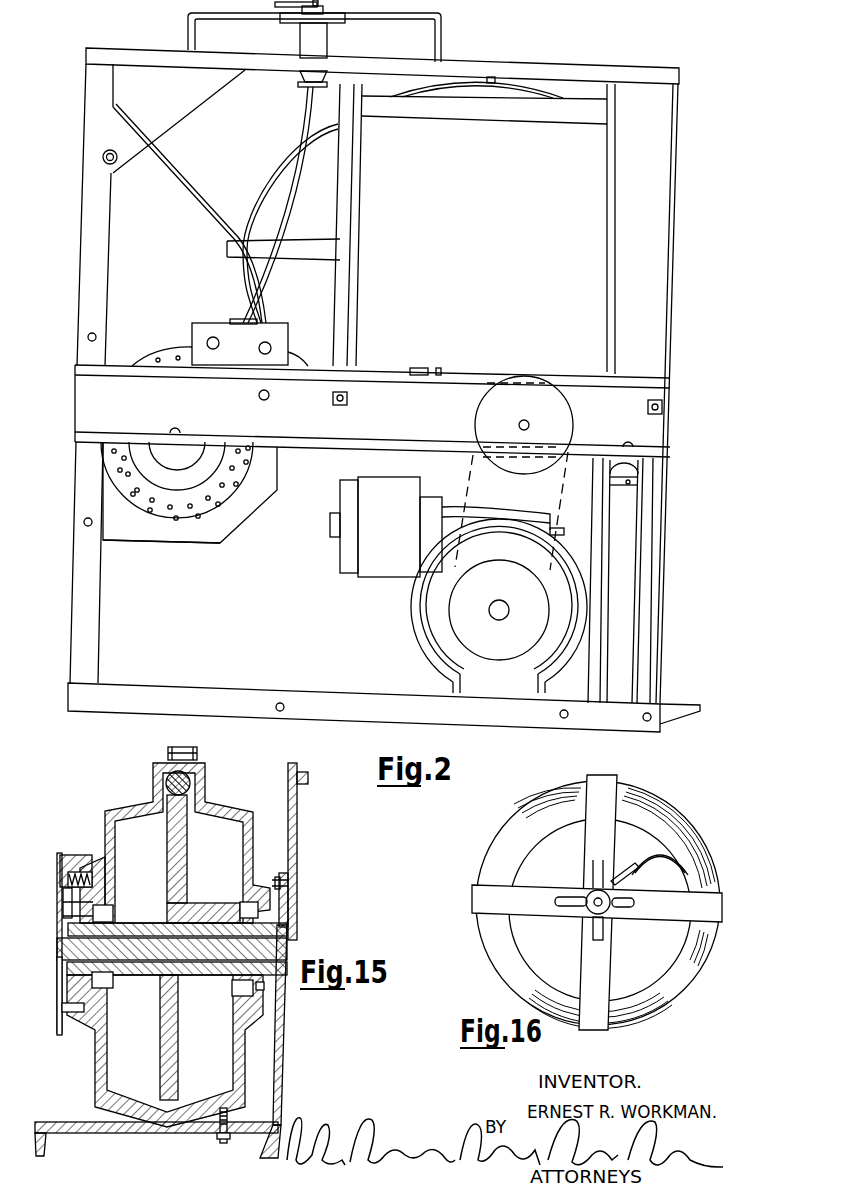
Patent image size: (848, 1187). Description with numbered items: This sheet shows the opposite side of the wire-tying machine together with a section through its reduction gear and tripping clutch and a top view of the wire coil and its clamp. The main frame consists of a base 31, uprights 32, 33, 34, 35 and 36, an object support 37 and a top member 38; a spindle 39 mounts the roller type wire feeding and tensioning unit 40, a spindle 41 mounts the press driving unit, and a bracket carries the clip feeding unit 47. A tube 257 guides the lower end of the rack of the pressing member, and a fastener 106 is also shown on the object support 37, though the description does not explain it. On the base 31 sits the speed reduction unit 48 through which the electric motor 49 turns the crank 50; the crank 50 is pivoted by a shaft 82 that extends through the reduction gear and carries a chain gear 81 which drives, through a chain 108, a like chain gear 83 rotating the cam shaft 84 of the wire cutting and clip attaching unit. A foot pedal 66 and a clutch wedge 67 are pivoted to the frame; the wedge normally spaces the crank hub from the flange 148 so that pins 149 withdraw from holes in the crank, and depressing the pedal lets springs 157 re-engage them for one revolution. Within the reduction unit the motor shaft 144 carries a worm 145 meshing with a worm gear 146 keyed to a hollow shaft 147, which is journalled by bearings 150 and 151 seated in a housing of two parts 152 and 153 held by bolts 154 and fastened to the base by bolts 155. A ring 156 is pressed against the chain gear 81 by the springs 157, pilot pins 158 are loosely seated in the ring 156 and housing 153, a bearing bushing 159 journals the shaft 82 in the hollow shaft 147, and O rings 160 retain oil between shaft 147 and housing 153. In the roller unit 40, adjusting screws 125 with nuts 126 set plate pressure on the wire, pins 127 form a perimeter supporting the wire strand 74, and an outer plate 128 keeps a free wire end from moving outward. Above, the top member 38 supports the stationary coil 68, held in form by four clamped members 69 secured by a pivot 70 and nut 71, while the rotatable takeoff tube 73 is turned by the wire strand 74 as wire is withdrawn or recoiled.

In FIG. 2, the base 31 is at (180, 690).
In FIG. 15, the base 31 is at (90, 1133).
In FIG. 2, the upright 32 is at (648, 632).
In FIG. 2, the upright 33 is at (100, 650).
In FIG. 2, the upright 34 is at (660, 250).
In FIG. 2, the upright 35 is at (350, 218).
In FIG. 2, the upright 36 is at (103, 285).
In FIG. 2, the object support 37 is at (493, 373).
In FIG. 2, the top member 38 is at (592, 68).
In FIG. 2, the spindle 39 is at (178, 432).
In FIG. 2, the roller type wire feeding and tensioning unit 40 is at (107, 452).
In FIG. 2, the spindle 41 is at (627, 447).
In FIG. 2, the clip feeding unit 47 is at (166, 109).
In FIG. 2, the speed reduction unit 48 is at (437, 633).
In FIG. 2, the electric motor 49 is at (347, 576).
In FIG. 15, the crank 50 is at (298, 815).
In FIG. 2, the foot pedal 66 is at (685, 712).
In FIG. 15, the clutch wedge 67 is at (282, 1070).
In FIG. 16, the coil of wire 68 is at (677, 987).
In FIG. 16, the clamped member 69 is at (600, 785).
In FIG. 16, the pivot 70 is at (607, 915).
In FIG. 16, the nut 71 is at (562, 892).
In FIG. 16, the rotatable takeoff tube 73 is at (615, 878).
In FIG. 16, the wire strand 74 is at (662, 858).
In FIG. 2, the chain gear 81 is at (508, 650).
In FIG. 15, the chain gear 81 is at (57, 1020).
In FIG. 2, the shaft 82 is at (502, 615).
In FIG. 15, the shaft 82 is at (58, 943).
In FIG. 2, the chain gear 83 is at (531, 466).
In FIG. 2, the cam shaft 84 is at (524, 431).
In FIG. 2, the bolt 106 is at (347, 398).
In FIG. 2, the chain 108 is at (463, 508).
In FIG. 2, the adjusting screw 125 is at (220, 485).
In FIG. 2, the nut 126 is at (200, 489).
In FIG. 2, the pin 127 is at (170, 510).
In FIG. 2, the outer plate 128 is at (210, 543).
In FIG. 15, the motor shaft 144 is at (197, 780).
In FIG. 15, the worm 145 is at (197, 787).
In FIG. 15, the worm gear 146 is at (182, 825).
In FIG. 15, the hollow shaft 147 is at (145, 922).
In FIG. 15, the flange 148 is at (290, 903).
In FIG. 15, the pin 149 is at (288, 883).
In FIG. 15, the bearing 150 is at (242, 905).
In FIG. 15, the bearing 151 is at (117, 907).
In FIG. 15, the housing part 152 is at (233, 1073).
In FIG. 15, the housing part 153 is at (108, 1072).
In FIG. 15, the bolt 154 is at (197, 755).
In FIG. 15, the bolt 155 is at (223, 1143).
In FIG. 15, the ring 156 is at (60, 1037).
In FIG. 15, the spring 157 is at (80, 867).
In FIG. 15, the pilot pin 158 is at (73, 1030).
In FIG. 15, the bearing bushing 159 is at (143, 975).
In FIG. 15, the O ring 160 is at (82, 922).
In FIG. 2, the tube 257 is at (602, 560).